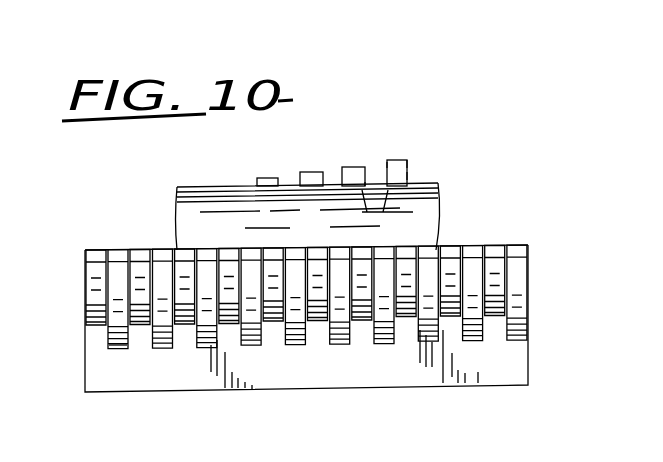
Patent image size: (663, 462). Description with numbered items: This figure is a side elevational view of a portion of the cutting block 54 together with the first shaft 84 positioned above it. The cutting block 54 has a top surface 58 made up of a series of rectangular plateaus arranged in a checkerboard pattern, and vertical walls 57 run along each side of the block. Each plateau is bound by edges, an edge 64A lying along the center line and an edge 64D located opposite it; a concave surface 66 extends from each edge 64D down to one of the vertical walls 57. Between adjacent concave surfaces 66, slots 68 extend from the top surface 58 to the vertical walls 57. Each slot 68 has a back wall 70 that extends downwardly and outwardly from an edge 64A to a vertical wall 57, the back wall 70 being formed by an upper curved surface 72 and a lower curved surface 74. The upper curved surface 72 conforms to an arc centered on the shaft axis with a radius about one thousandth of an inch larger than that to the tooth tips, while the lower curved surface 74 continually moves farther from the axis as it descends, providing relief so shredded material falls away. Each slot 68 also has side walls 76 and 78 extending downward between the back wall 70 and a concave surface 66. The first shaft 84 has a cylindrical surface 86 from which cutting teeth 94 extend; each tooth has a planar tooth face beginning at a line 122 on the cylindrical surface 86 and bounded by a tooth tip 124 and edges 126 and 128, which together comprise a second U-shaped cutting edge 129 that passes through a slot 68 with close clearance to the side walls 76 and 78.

The cutting block 54 is at (338, 390).
The vertical wall 57 is at (462, 388).
The top surface 58 is at (88, 250).
The edge 64A is at (108, 250).
The edge 64D is at (130, 250).
The concave surface 66 is at (175, 314).
The slot 68 is at (470, 343).
The back wall 70 is at (113, 337).
The upper curved surface 72 is at (100, 262).
The lower curved surface 74 is at (125, 295).
The side wall 76 is at (140, 330).
The side wall 78 is at (190, 330).
The first shaft 84 is at (445, 213).
The cylindrical surface 86 is at (215, 185).
The cutting tooth 94 is at (413, 153).
The line 122 is at (376, 208).
The tooth tip 124 is at (350, 168).
The edge 126 is at (388, 165).
The edge 128 is at (413, 172).
The second U-shaped cutting edge 129 is at (380, 167).